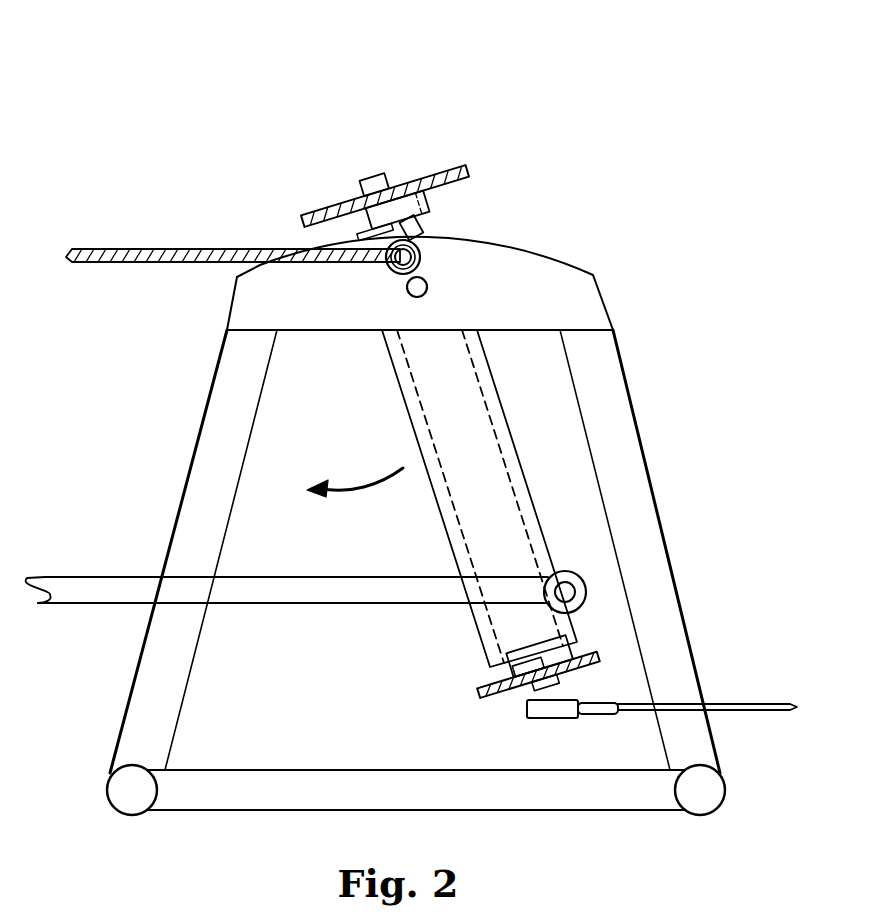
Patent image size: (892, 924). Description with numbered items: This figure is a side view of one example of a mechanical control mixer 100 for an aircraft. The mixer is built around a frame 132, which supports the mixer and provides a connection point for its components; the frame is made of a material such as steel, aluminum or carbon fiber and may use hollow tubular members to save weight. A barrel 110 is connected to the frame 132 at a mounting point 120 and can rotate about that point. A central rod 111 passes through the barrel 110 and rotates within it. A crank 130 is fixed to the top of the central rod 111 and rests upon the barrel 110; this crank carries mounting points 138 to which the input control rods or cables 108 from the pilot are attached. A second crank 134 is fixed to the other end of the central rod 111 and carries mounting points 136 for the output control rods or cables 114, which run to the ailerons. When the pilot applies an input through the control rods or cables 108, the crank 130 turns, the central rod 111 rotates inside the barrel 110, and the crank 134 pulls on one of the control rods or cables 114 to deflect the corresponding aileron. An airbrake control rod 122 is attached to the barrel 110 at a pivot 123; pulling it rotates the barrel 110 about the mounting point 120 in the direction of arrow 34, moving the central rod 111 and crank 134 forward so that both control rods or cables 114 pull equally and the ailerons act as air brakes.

The control mixer 100 is at (566, 52).
The input control rods or cables 108 is at (223, 248).
The barrel 110 is at (440, 210).
The central rod 111 is at (410, 187).
The control rods or cables 114 is at (753, 703).
The mounting point 120 is at (430, 288).
The airbrake control rod 122 is at (340, 605).
The pivot 123 is at (578, 586).
The crank 130 is at (458, 167).
The frame 132 is at (633, 405).
The crank 134 is at (480, 698).
The mounting points 136 is at (565, 721).
The mounting points 138 is at (392, 267).
The arrow 34 is at (355, 490).